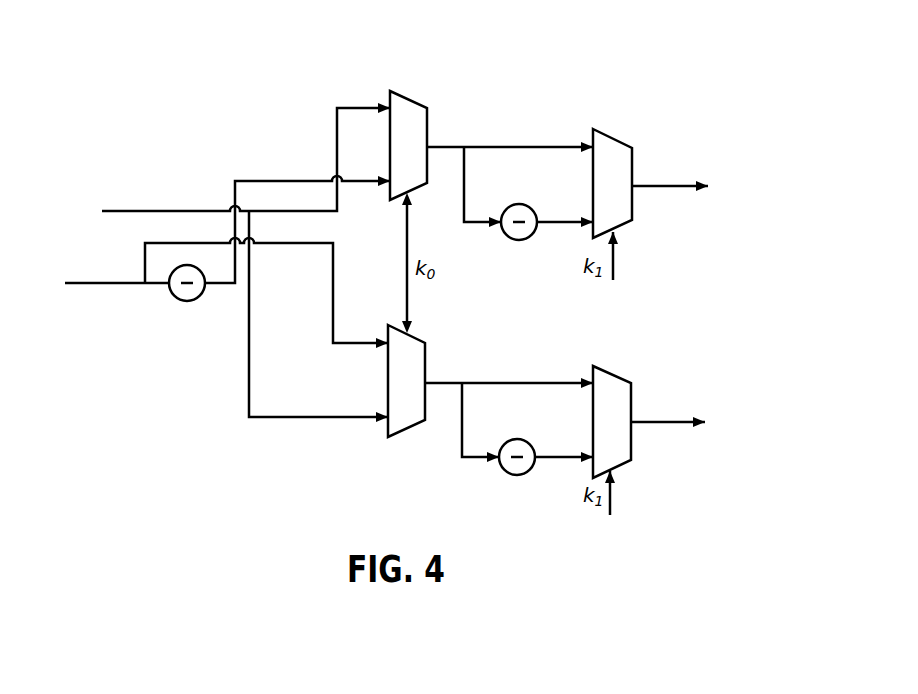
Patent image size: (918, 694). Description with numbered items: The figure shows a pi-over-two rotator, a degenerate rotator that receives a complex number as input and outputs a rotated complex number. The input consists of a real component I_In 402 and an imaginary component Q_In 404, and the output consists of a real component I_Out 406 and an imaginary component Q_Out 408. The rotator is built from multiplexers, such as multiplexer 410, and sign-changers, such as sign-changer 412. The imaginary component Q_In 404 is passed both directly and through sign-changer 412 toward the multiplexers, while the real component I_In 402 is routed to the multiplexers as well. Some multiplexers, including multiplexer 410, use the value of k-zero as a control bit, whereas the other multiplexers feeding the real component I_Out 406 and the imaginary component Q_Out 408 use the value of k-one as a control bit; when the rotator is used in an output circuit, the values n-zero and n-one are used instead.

The real component I_In 402 is at (234, 262).
The imaginary component Q_In 404 is at (215, 259).
The real component I_Out 406 is at (697, 166).
The imaginary component Q_Out 408 is at (701, 403).
The multiplexer 410 is at (411, 129).
The sign-changer 412 is at (188, 300).